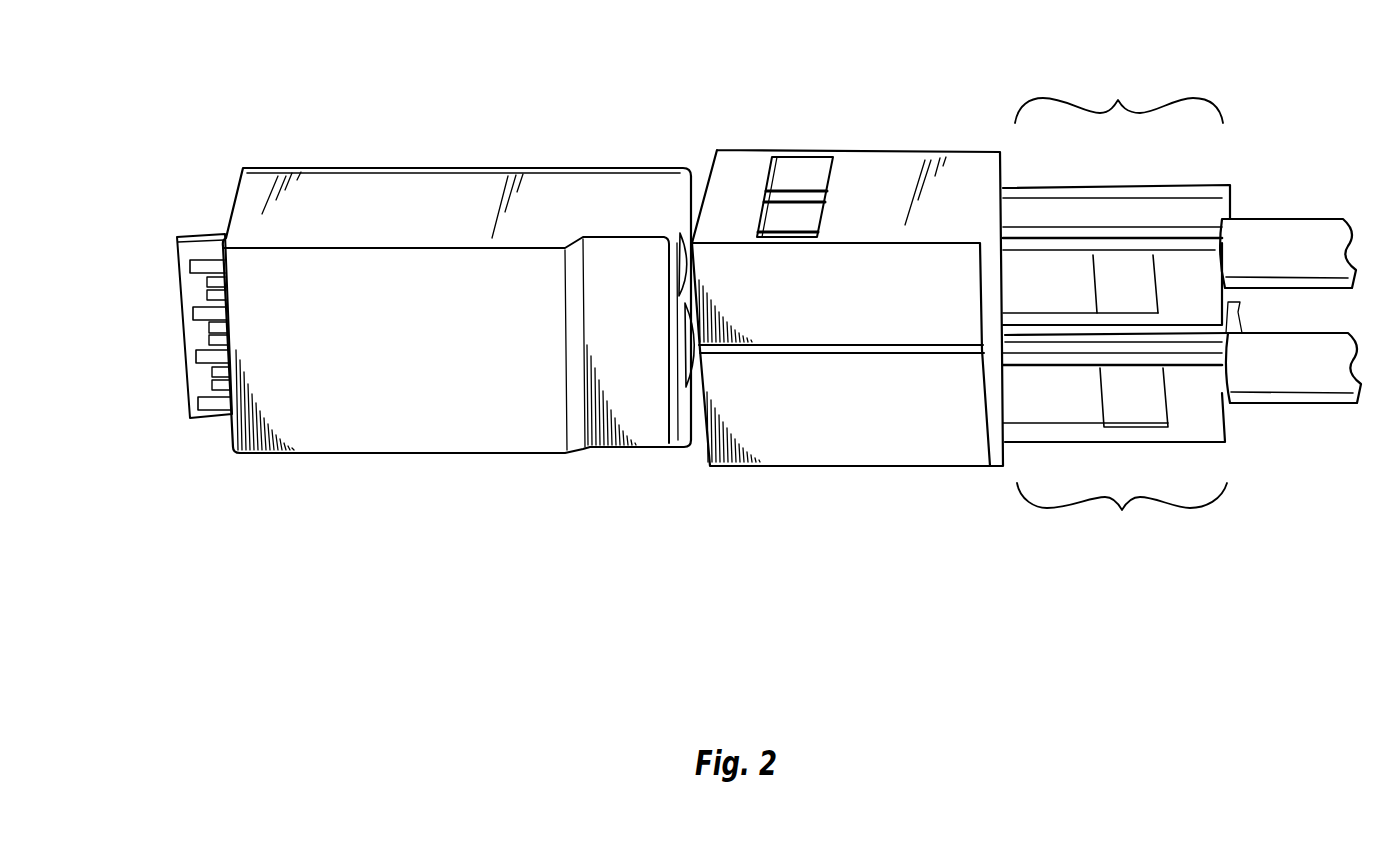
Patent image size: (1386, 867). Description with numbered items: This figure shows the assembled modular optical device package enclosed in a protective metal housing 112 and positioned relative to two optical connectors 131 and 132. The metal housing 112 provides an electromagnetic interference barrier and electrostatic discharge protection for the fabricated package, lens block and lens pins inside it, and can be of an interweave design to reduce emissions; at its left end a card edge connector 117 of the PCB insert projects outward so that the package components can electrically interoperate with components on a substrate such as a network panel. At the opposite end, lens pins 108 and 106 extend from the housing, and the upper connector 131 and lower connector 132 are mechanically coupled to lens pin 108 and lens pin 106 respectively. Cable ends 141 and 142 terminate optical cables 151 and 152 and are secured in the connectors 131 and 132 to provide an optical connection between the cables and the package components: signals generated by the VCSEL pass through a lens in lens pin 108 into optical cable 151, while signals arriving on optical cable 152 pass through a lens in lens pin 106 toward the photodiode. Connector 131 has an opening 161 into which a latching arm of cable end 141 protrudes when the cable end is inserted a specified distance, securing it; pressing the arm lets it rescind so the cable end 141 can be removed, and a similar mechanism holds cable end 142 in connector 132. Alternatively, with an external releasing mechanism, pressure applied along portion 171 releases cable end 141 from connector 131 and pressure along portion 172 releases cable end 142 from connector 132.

The lens pin 106 is at (700, 385).
The lens pin 108 is at (682, 227).
The metal housing 112 is at (372, 190).
The card edge connector 117 is at (142, 235).
The connector 131 is at (897, 160).
The connector 132 is at (855, 452).
The cable end 141 is at (1128, 193).
The cable end 142 is at (1095, 432).
The optical cable 151 is at (1280, 235).
The optical cable 152 is at (1290, 377).
The opening 161 is at (797, 177).
The portion 171 is at (1119, 96).
The portion 172 is at (1122, 517).